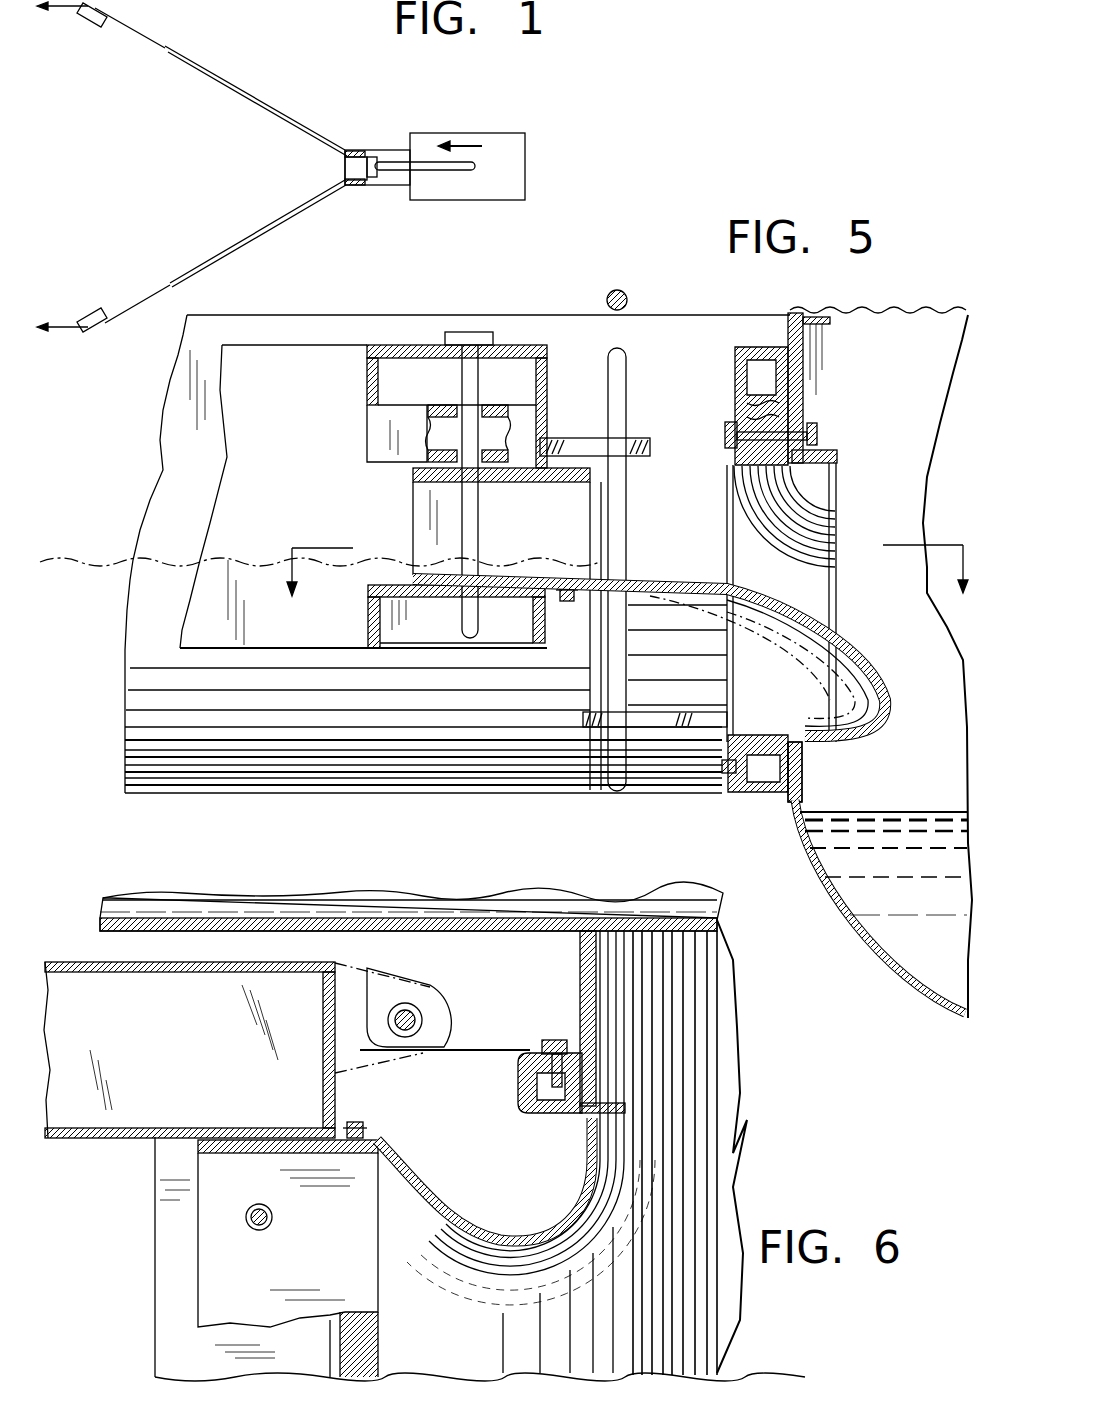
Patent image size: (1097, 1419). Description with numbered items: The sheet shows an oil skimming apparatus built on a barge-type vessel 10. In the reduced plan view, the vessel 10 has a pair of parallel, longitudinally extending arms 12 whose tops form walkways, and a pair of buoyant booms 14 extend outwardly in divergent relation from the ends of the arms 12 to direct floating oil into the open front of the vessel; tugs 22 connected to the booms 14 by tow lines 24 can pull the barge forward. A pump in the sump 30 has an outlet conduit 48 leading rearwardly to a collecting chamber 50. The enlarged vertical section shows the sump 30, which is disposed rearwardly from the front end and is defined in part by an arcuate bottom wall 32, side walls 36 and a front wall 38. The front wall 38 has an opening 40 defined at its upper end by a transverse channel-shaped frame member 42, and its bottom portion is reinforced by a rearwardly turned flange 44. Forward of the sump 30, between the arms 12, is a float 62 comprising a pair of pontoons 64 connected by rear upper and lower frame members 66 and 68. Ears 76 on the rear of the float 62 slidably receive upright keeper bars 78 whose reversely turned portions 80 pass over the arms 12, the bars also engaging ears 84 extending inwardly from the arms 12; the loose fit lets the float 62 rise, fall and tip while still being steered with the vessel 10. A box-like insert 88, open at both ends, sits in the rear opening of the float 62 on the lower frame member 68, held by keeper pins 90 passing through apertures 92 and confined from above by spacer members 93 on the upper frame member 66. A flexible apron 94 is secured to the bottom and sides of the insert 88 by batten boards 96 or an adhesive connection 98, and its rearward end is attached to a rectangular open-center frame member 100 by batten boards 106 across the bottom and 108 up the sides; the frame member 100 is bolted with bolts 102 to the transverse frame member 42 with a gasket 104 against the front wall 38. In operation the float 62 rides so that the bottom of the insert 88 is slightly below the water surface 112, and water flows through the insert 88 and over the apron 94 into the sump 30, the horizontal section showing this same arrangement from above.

In FIG. 1, the vessel 10 is at (387, 151).
In FIG. 5, the vessel 10 is at (265, 315).
In FIG. 6, the vessel 10 is at (390, 886).
In FIG. 1, the arms 12 is at (353, 151).
In FIG. 5, the arms 12 is at (130, 736).
In FIG. 6, the arms 12 is at (193, 903).
In FIG. 1, the booms 14 is at (293, 132).
In FIG. 1, the tugs 22 is at (95, 312).
In FIG. 1, the tow lines 24 is at (143, 36).
In FIG. 1, the sump 30 is at (372, 178).
In FIG. 5, the sump 30 is at (914, 987).
In FIG. 6, the sump 30 is at (723, 1048).
In FIG. 6, the arcuate bottom wall 32 is at (720, 1200).
In FIG. 5, the side walls 36 is at (910, 508).
In FIG. 6, the side walls 36 is at (717, 920).
In FIG. 5, the front wall 38 is at (803, 800).
In FIG. 6, the front wall 38 is at (582, 950).
In FIG. 5, the opening 40 is at (830, 468).
In FIG. 6, the opening 40 is at (484, 1179).
In FIG. 5, the transverse channel-shaped frame member 42 is at (790, 312).
In FIG. 5, the transverse rearwardly turned flange 44 is at (779, 845).
In FIG. 1, the outlet conduit 48 is at (445, 171).
In FIG. 1, the collecting chamber 50 is at (515, 157).
In FIG. 1, the float 62 is at (344, 163).
In FIG. 5, the float 62 is at (217, 447).
In FIG. 6, the float 62 is at (110, 1138).
In FIG. 5, the pontoons 64 is at (210, 508).
In FIG. 6, the pontoons 64 is at (77, 967).
In FIG. 5, the rear upper frame member 66 is at (516, 346).
In FIG. 5, the rear lower frame member 68 is at (368, 628).
In FIG. 6, the rear lower frame member 68 is at (175, 1327).
In FIG. 5, the ears 76 is at (645, 437).
In FIG. 6, the ears 76 is at (370, 1067).
In FIG. 5, the keeper bars 78 is at (612, 357).
In FIG. 6, the keeper bars 78 is at (406, 1037).
In FIG. 5, the reversely turned portions 80 is at (632, 291).
In FIG. 5, the ears 84 is at (647, 727).
In FIG. 6, the ears 84 is at (477, 1022).
In FIG. 5, the insert 88 is at (415, 477).
In FIG. 6, the insert 88 is at (225, 1260).
In FIG. 5, the keeper pins 90 is at (470, 333).
In FIG. 6, the keeper pins 90 is at (245, 1217).
In FIG. 5, the apertures 92 is at (453, 337).
In FIG. 6, the apertures 92 is at (245, 1222).
In FIG. 5, the spacer members 93 is at (373, 427).
In FIG. 5, the flexible apron 94 is at (760, 632).
In FIG. 6, the flexible apron 94 is at (530, 1290).
In FIG. 5, the batten boards 96 is at (573, 600).
In FIG. 6, the batten boards 96 is at (377, 1132).
In FIG. 6, the adhesive connection 98 is at (363, 1343).
In FIG. 5, the rectangular open center frame member 100 is at (745, 350).
In FIG. 6, the rectangular open center frame member 100 is at (530, 1094).
In FIG. 5, the bolts 102 is at (837, 360).
In FIG. 5, the gasket 104 is at (788, 350).
In FIG. 5, the batten boards 106 is at (724, 785).
In FIG. 6, the batten boards 108 is at (541, 1043).
In FIG. 5, the water surface 112 is at (100, 557).